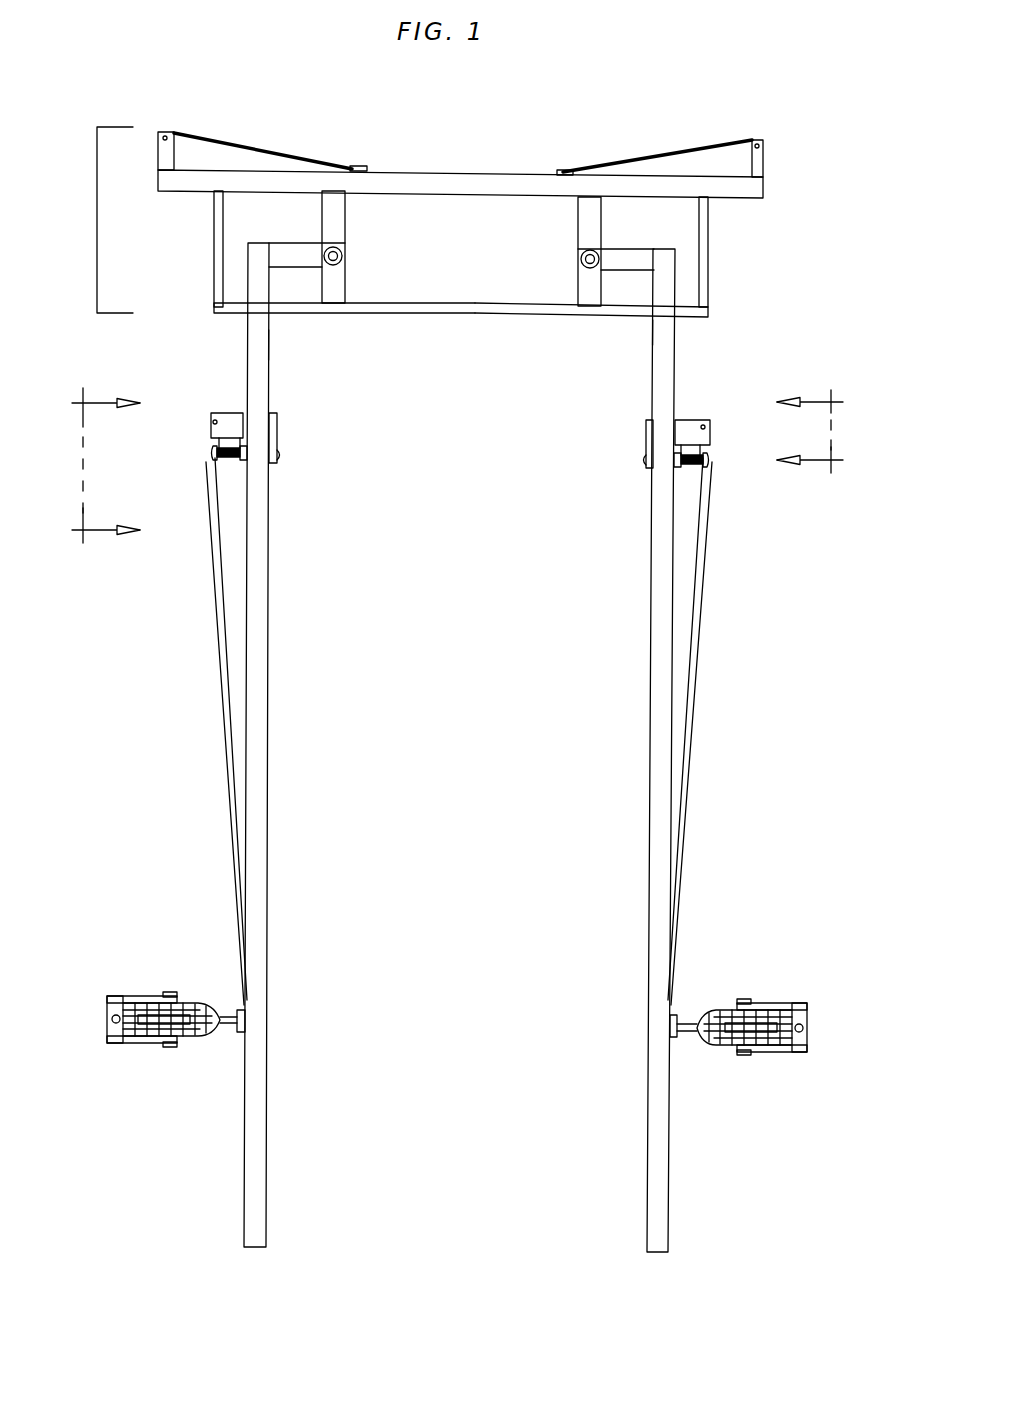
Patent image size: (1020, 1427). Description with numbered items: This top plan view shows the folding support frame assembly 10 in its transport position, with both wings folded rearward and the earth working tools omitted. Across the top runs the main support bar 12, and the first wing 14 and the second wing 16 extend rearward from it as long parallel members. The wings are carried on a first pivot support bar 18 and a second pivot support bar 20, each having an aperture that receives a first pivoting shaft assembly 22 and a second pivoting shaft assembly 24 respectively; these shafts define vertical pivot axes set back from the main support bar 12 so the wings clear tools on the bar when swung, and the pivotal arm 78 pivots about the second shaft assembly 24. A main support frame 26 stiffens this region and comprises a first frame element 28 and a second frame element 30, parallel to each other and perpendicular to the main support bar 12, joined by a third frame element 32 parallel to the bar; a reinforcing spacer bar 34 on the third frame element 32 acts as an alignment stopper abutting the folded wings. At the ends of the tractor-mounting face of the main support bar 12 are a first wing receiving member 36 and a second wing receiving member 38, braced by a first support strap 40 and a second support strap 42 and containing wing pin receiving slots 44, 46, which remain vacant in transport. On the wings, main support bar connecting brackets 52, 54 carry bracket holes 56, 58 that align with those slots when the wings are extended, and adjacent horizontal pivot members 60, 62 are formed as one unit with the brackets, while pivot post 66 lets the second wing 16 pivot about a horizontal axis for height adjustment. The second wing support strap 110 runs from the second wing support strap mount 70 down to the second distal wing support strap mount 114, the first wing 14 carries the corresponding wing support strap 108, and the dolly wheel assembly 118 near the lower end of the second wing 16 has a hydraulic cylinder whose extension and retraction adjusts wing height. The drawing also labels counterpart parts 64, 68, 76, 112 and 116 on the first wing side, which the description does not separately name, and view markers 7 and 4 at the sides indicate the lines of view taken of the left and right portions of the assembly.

The folding support frame assembly 10 is at (168, 1147).
The main support bar 12 is at (457, 170).
The first wing 14 is at (647, 626).
The second wing 16 is at (273, 606).
The first pivot support bar 18 is at (574, 222).
The second pivot support bar 20 is at (348, 223).
The first pivoting shaft assembly 22 is at (598, 258).
The second pivoting shaft assembly 24 is at (344, 257).
The main support frame 26 is at (96, 220).
The first frame element 28 is at (713, 257).
The second frame element 30 is at (204, 244).
The third frame element 32 is at (474, 316).
The reinforcing spacer bar 34 is at (415, 306).
The first wing receiving member 36 is at (767, 158).
The second wing receiving member 38 is at (154, 150).
The first support strap 40 is at (672, 152).
The second support strap 42 is at (260, 142).
The wing pin receiving slot 44 is at (757, 136).
The wing pin receiving slot 46 is at (167, 132).
The main support bar connecting bracket 52 is at (712, 424).
The main support bar connecting bracket 54 is at (200, 408).
The bracket hole 56 is at (692, 416).
The bracket hole 58 is at (214, 425).
The horizontal pivot member 60 is at (686, 474).
The horizontal pivot member 62 is at (226, 471).
The right leg tab 64 is at (643, 468).
The pivot post 66 is at (279, 455).
The right clamp bolt 68 is at (708, 462).
The second wing support strap mount 70 is at (213, 455).
The right leg upper portion 76 is at (652, 332).
The pivotal arm 78 is at (268, 340).
The wing support strap 108 is at (690, 683).
The second wing support strap 110 is at (222, 600).
The right cable 112 is at (672, 985).
The second distal wing support strap mount 114 is at (244, 985).
The right winch 116 is at (725, 1058).
The dolly wheel assembly 118 is at (193, 1050).
The view indicator 7- 7 is at (96, 467).
The section line 4- 4 is at (819, 433).